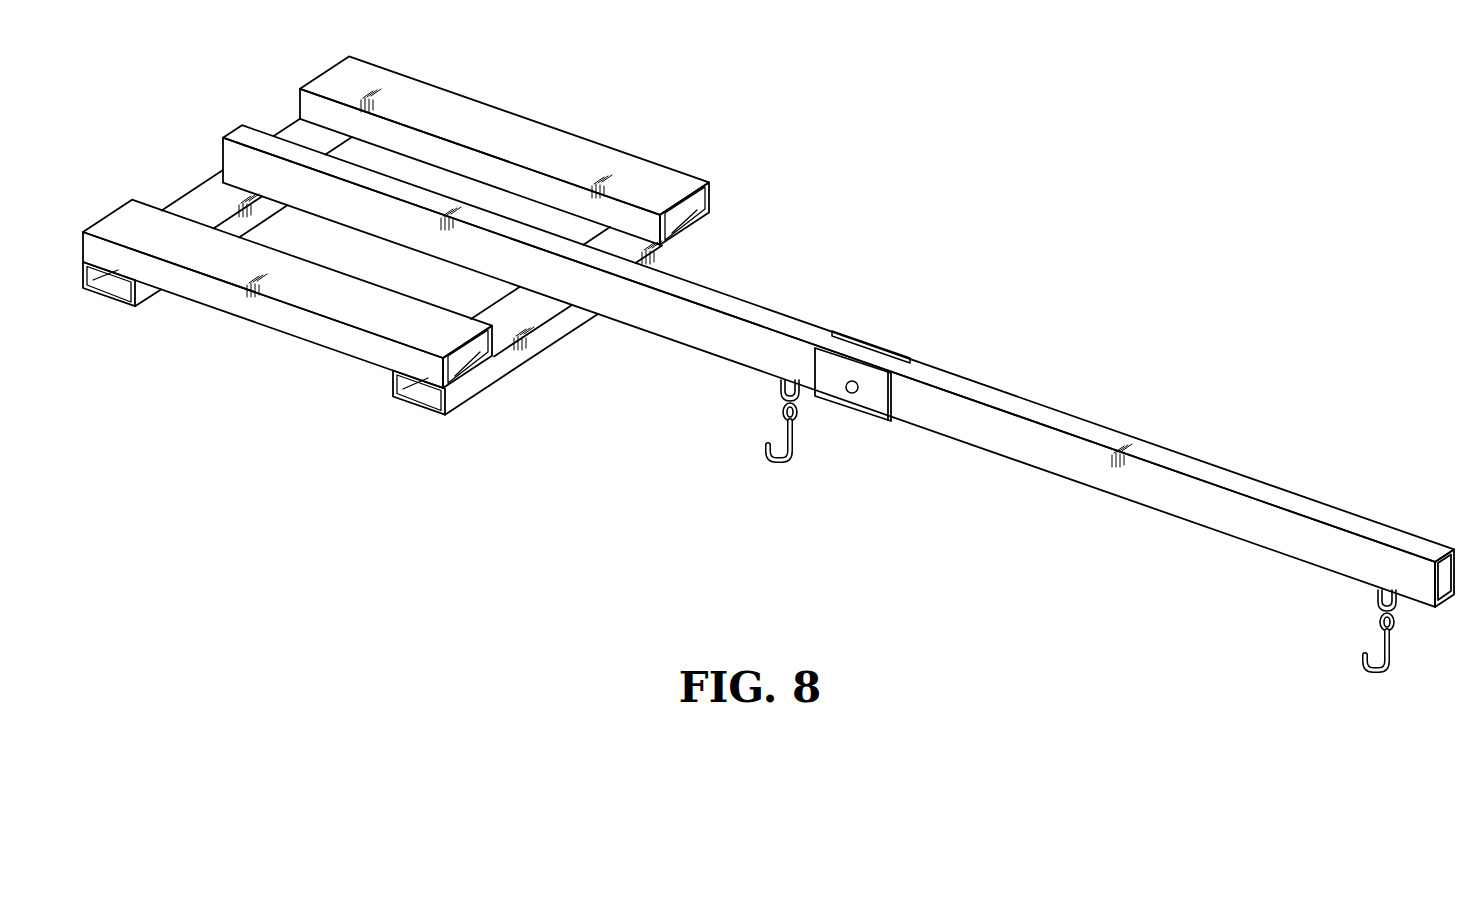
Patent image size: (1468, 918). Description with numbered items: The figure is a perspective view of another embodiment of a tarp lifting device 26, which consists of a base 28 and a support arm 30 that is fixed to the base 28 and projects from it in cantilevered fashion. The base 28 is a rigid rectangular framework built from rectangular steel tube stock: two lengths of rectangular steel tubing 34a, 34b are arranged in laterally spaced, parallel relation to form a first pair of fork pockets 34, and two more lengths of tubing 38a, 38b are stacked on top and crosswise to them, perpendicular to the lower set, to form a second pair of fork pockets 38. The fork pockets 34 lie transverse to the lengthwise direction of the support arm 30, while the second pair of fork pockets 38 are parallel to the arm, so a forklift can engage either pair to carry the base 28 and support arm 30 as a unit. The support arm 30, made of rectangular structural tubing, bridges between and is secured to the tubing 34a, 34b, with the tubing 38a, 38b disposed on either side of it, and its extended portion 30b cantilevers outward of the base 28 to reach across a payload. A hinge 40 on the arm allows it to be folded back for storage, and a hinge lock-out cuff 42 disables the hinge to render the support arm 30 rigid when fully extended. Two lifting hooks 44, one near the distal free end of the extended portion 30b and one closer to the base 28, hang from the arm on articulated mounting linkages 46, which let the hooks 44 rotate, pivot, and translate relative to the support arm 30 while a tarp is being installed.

The tarp lifting device 26 is at (936, 278).
The base 28 is at (517, 112).
The support arm 30 is at (1186, 452).
The extended portion 30b is at (1326, 516).
The fork pockets 34 is at (115, 283).
The rectangular steel tubing 34a is at (205, 198).
The rectangular steel tubing 34b is at (520, 323).
The second pair of fork pockets 38 is at (686, 212).
The rectangular steel tubing 38a is at (343, 307).
The rectangular steel tubing 38b is at (584, 162).
The hinge 40 is at (858, 360).
The hinge lock-out cuff 42 is at (877, 403).
The lifting hooks 44 is at (778, 462).
The articulated mounting linkages 46 is at (780, 405).